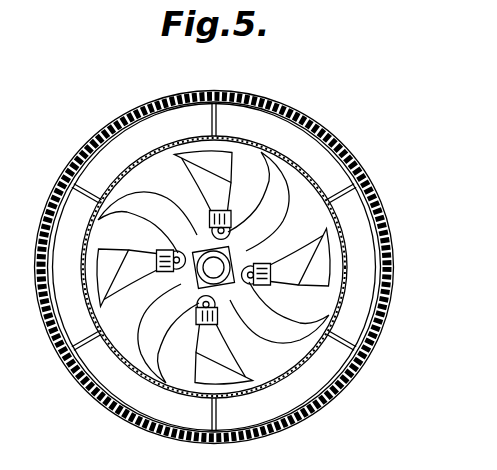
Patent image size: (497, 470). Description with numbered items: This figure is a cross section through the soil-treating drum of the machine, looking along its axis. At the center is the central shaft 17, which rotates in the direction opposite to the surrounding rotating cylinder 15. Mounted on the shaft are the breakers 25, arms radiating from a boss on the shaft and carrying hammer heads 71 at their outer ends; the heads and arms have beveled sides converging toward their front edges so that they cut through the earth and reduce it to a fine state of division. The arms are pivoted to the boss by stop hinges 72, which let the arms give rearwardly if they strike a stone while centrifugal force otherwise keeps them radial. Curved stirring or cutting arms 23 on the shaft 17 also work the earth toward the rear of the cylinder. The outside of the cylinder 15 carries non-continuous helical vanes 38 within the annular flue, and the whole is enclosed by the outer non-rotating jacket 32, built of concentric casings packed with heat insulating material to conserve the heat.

The rotating cylinder 15 is at (297, 158).
The central shaft 17 is at (200, 238).
The stirring or cutting arms 23 is at (202, 293).
The breakers 25 is at (138, 268).
The outer non-rotating jacket 32 is at (62, 180).
The non-continuous helical vanes 38 is at (214, 267).
The hammer heads 71 is at (108, 258).
The stop hinges 72 is at (229, 236).